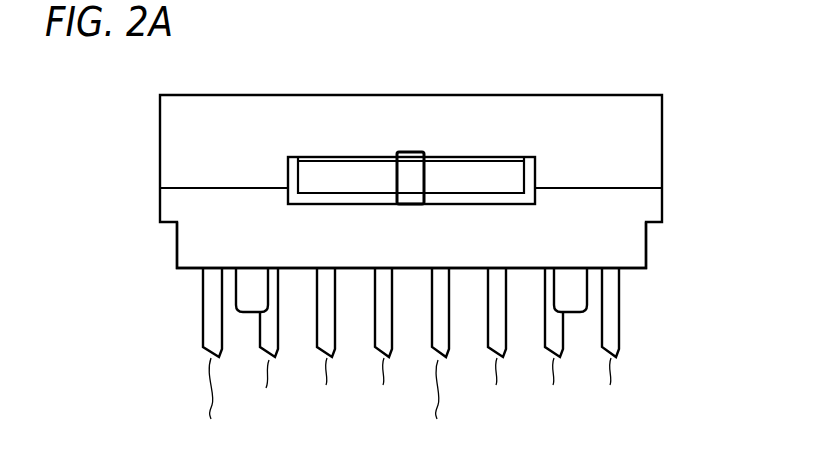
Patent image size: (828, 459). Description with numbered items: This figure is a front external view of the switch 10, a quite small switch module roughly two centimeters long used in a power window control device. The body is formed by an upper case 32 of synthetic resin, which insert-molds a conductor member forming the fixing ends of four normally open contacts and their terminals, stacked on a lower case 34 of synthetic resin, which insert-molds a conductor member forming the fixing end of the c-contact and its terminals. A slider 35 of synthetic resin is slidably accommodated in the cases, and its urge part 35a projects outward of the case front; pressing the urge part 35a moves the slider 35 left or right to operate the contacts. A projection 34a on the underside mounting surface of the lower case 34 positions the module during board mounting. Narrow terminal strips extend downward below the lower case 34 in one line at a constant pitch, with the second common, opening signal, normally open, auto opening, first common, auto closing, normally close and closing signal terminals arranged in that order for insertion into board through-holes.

The switch 10 is at (466, 247).
The upper case 32 is at (586, 110).
The lower case 34 is at (637, 242).
The projection 34a is at (573, 313).
The slider 35 is at (350, 168).
The urge part 35a is at (410, 165).